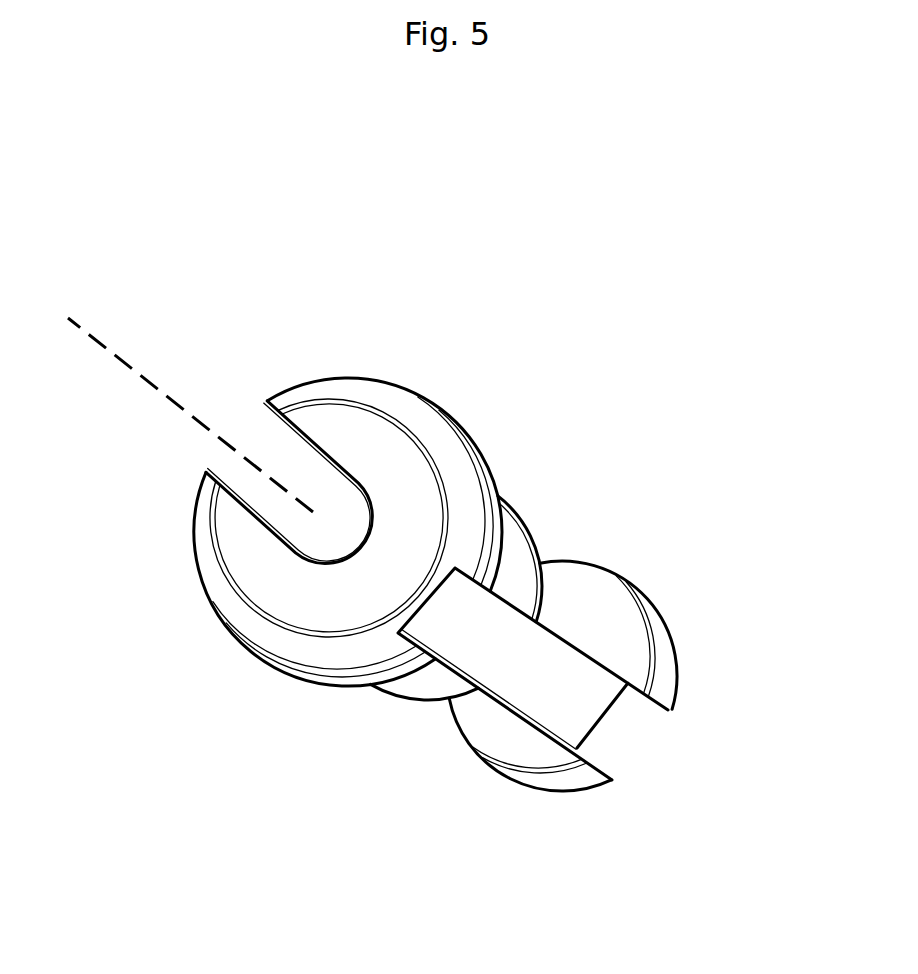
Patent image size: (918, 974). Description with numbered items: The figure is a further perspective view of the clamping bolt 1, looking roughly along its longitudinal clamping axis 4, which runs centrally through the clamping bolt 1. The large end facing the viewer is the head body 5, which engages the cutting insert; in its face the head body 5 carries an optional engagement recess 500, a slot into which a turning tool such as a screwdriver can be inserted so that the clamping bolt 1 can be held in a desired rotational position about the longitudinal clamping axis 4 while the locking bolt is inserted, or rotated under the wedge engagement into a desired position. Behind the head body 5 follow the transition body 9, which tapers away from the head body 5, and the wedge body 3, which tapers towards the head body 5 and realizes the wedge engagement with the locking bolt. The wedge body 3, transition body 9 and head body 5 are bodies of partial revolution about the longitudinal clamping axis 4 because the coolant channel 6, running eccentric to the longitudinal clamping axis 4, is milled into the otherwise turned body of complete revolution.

The clamping bolt 1 is at (568, 845).
The wedge body 3 is at (603, 637).
The longitudinal clamping axis 4 is at (203, 415).
The head body 5 is at (428, 406).
The coolant channel 6 is at (520, 653).
The transition body 9 is at (518, 577).
The engagement recess 500 is at (323, 517).